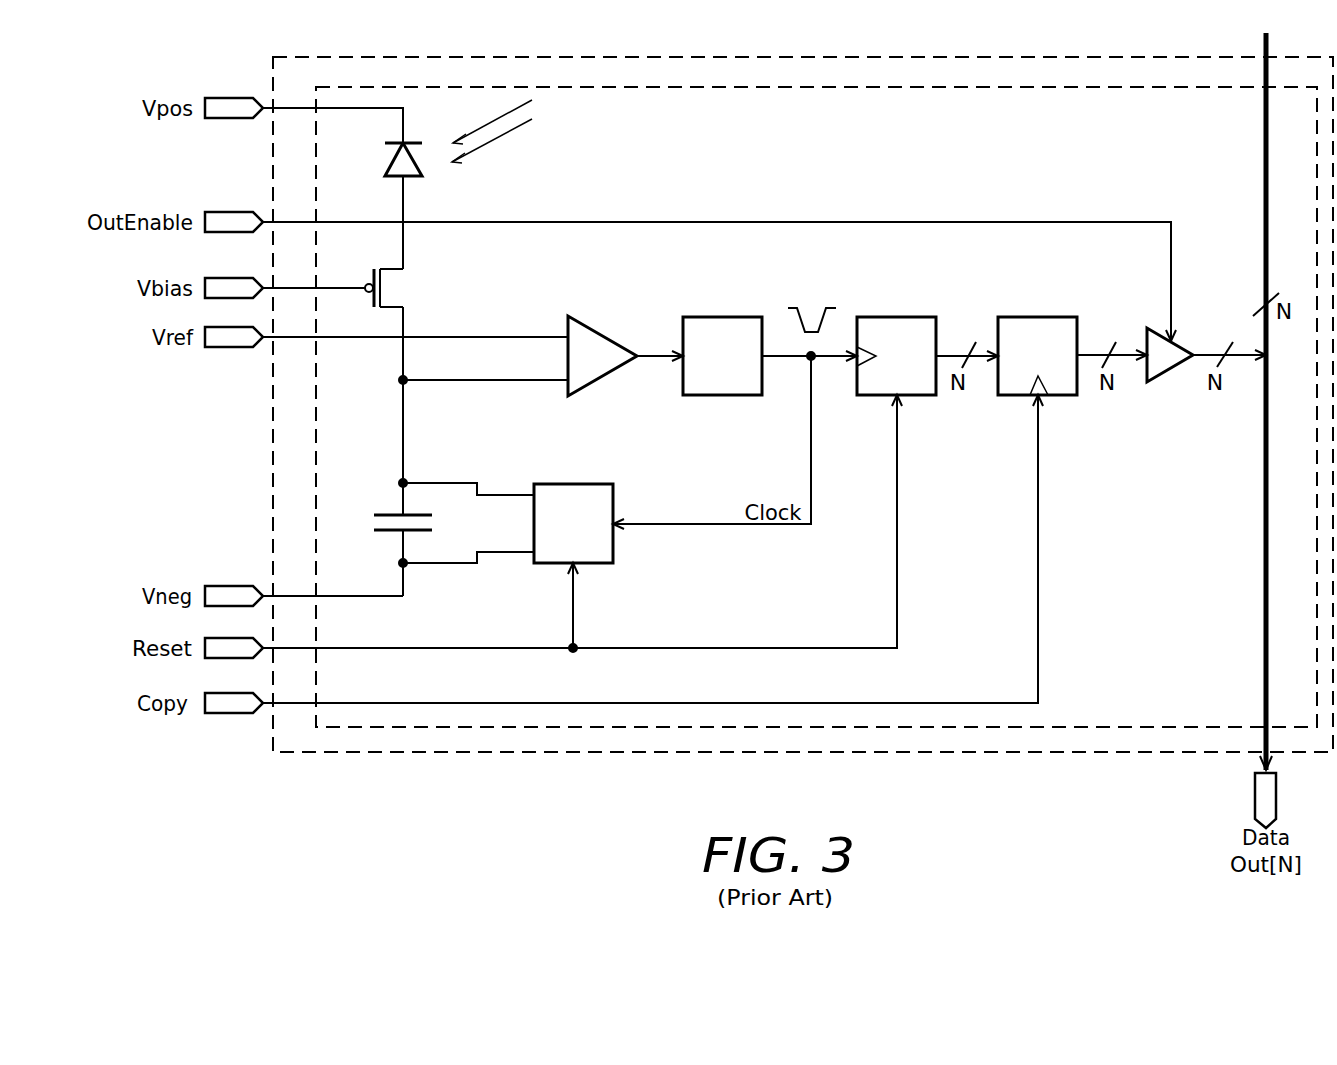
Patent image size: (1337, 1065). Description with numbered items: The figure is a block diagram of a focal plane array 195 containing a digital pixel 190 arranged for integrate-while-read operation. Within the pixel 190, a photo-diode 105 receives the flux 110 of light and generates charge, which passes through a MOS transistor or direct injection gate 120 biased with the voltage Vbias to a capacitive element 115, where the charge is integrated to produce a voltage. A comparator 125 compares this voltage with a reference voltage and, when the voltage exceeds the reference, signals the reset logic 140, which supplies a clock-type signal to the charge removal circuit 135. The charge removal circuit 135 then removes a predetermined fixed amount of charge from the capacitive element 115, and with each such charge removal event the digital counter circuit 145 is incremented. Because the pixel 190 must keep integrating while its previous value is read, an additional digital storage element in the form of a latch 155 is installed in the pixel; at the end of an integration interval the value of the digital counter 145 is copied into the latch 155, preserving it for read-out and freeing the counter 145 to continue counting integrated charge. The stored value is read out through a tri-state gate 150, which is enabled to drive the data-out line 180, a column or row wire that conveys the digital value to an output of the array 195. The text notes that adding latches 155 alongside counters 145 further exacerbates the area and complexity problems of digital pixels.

The photo-diode 105 is at (413, 177).
The flux 110 is at (503, 133).
The capacitive element 115 is at (400, 513).
The direct injection gate 120 is at (392, 303).
The comparator 125 is at (585, 323).
The charge removal circuit 135 is at (614, 490).
The reset logic 140 is at (717, 317).
The digital counter circuit 145 is at (898, 317).
The tri-state gate 150 is at (1159, 377).
The latch 155 is at (1028, 317).
The data-out line 180 is at (1266, 158).
The pixel 190 is at (408, 728).
The array 195 is at (898, 752).